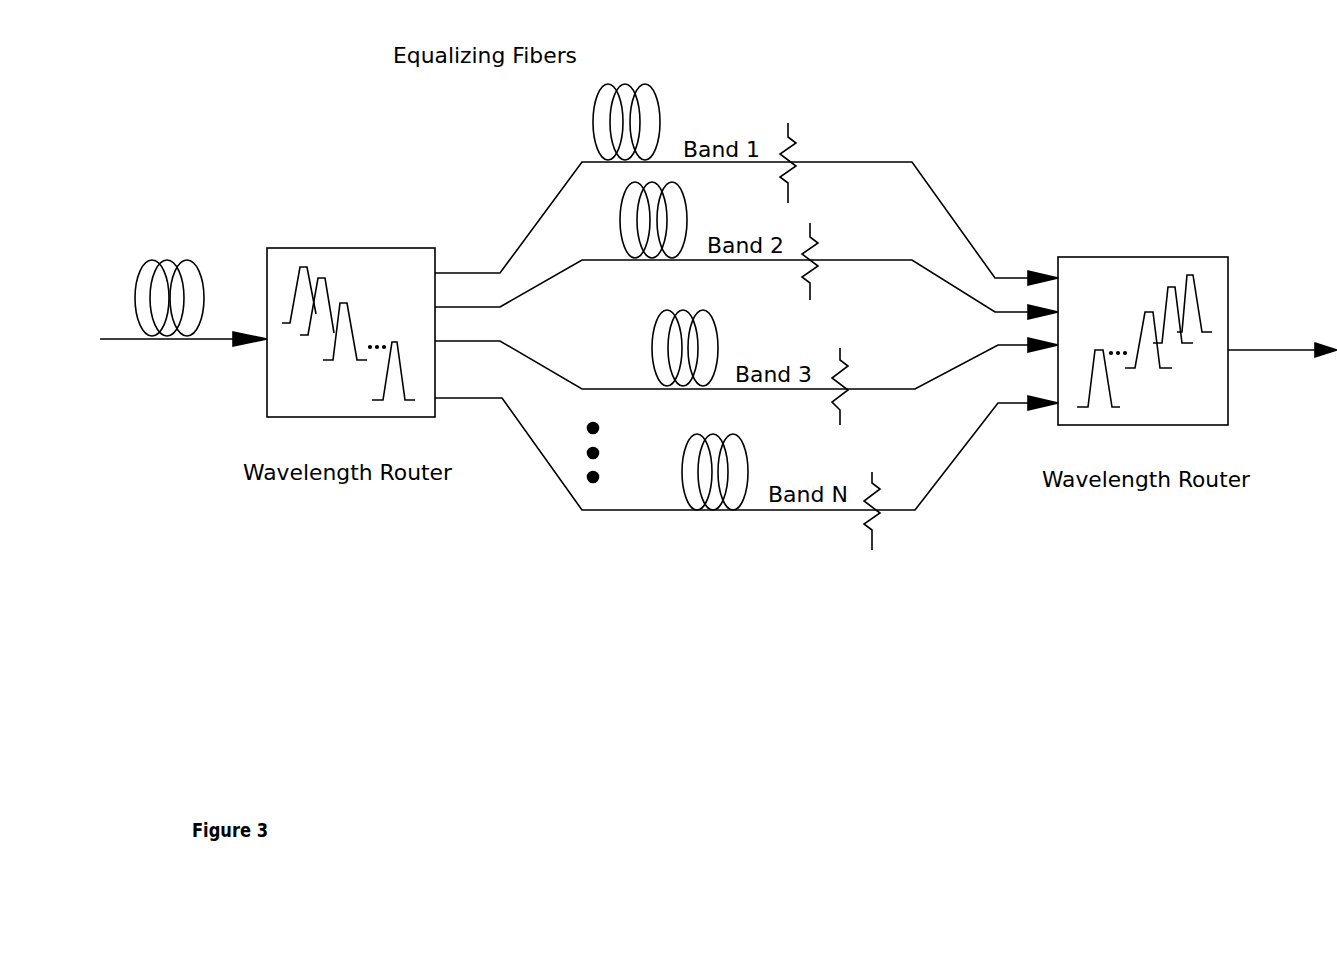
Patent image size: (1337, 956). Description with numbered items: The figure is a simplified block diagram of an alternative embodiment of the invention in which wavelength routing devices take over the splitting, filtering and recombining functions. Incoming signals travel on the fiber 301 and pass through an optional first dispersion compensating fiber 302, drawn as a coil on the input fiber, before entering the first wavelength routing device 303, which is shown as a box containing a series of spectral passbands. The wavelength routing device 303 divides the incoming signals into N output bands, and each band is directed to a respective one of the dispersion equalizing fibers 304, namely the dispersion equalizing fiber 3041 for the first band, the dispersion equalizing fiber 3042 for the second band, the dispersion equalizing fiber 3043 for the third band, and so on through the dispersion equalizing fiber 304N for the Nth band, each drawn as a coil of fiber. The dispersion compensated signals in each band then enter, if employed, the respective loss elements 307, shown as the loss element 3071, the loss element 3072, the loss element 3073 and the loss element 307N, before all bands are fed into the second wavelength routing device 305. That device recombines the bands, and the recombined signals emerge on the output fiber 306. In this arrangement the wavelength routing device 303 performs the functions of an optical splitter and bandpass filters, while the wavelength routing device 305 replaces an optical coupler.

The fiber 301 is at (120, 339).
The first dispersion compensating fiber 302 is at (170, 258).
The wavelength routing device 303 is at (350, 248).
The dispersion equalizing fibers 304 is at (672, 289).
The dispersion equalizing fiber 3041 is at (658, 91).
The dispersion equalizing fiber 3042 is at (686, 191).
The dispersion equalizing fiber 3043 is at (657, 322).
The dispersion equalizing fiber 304N is at (689, 438).
The wavelength routing device 305 is at (1138, 257).
The fiber 306 is at (1273, 350).
The loss elements 307 is at (866, 329).
The loss element 3071 is at (788, 124).
The loss element 3072 is at (810, 224).
The loss element 3073 is at (840, 349).
The loss element 307N is at (872, 472).